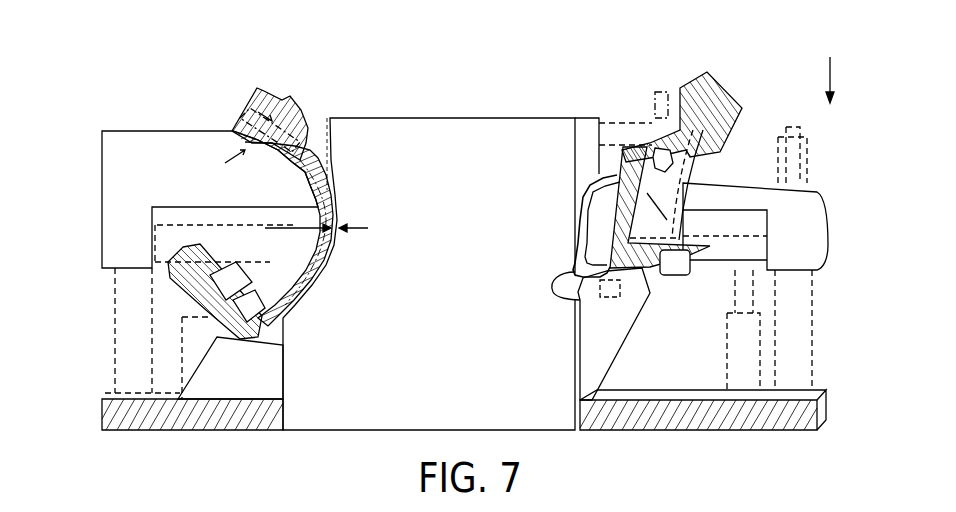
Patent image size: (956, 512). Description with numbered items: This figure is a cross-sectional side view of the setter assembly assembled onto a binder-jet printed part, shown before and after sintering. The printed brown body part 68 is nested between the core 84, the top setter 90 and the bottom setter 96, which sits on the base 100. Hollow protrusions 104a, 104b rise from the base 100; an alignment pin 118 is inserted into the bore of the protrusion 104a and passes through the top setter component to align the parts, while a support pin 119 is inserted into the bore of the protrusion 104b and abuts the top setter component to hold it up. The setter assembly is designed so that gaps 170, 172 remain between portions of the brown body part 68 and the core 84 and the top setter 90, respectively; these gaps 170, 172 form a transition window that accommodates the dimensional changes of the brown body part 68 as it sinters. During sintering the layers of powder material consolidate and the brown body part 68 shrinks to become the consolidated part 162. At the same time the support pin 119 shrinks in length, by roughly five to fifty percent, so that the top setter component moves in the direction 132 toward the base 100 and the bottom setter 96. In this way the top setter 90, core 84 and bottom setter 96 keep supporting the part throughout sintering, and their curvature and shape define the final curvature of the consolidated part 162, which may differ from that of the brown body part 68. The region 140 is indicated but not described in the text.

The brown body part 68 is at (268, 88).
The core 84 is at (459, 118).
The top setter 90 is at (100, 172).
The bottom setter 96 is at (193, 363).
The base 100 is at (100, 410).
The protrusion 104a is at (818, 345).
The protrusion 104b is at (762, 365).
The alignment pin 118 is at (812, 137).
The support pin 119 is at (756, 288).
The direction 132 is at (838, 70).
The gap 140 is at (316, 104).
The consolidated part 162 is at (265, 120).
The gap 170 is at (355, 228).
The gap 172 is at (228, 152).